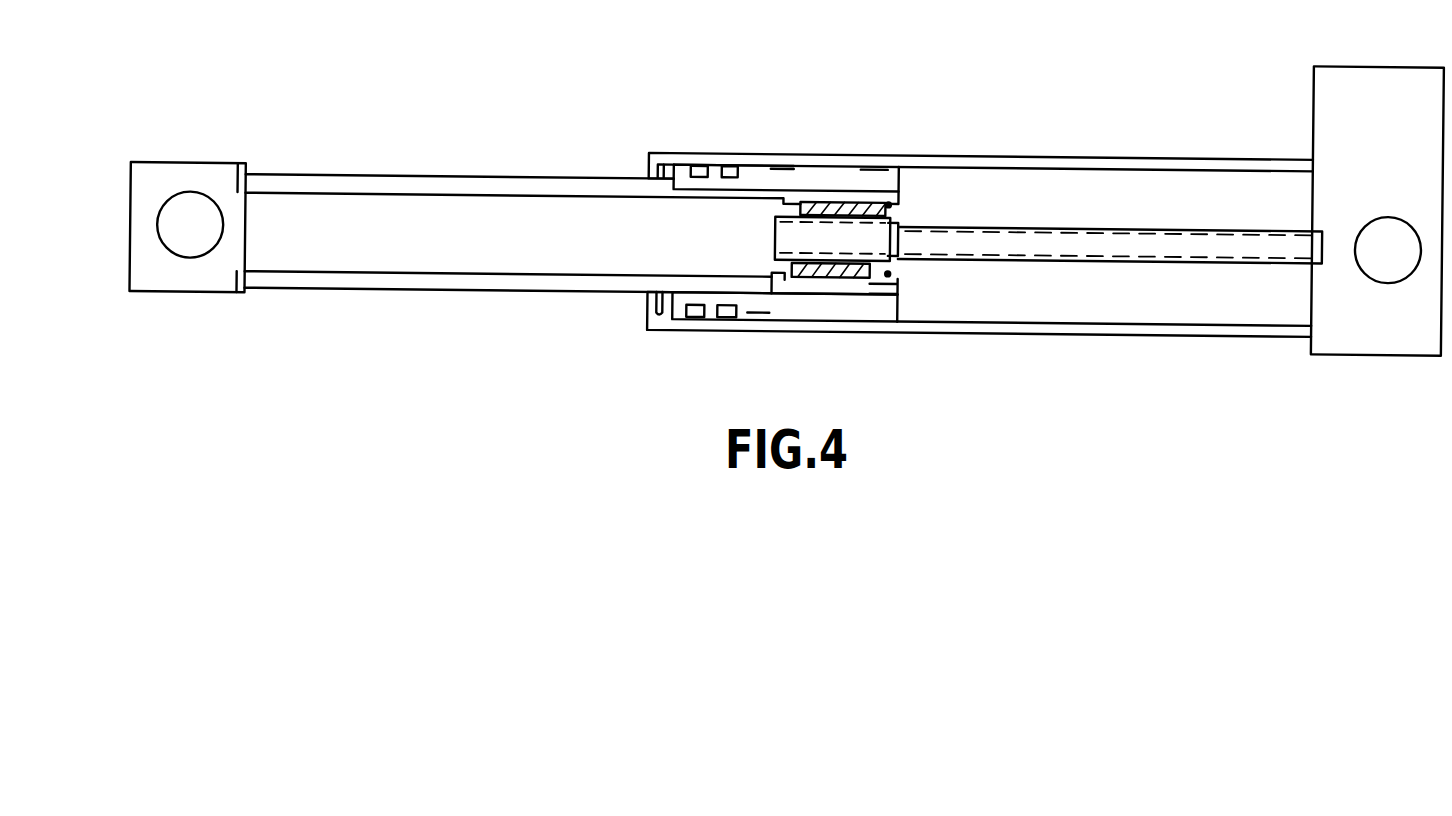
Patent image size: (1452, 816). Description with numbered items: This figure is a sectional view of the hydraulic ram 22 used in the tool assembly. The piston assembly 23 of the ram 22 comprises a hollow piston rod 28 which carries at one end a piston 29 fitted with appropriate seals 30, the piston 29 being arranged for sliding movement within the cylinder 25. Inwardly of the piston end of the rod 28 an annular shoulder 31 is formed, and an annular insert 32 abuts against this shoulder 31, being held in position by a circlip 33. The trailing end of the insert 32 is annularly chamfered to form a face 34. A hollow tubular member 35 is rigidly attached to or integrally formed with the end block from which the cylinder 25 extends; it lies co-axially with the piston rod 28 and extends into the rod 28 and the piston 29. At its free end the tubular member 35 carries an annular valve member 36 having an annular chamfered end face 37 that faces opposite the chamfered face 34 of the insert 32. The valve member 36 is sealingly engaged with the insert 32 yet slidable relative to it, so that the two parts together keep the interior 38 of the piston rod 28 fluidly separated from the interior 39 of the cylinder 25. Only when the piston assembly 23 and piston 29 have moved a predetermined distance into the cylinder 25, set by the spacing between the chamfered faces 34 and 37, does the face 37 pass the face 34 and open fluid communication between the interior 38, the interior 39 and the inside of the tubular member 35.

The hydraulic ram 22 is at (836, 100).
The piston assembly 23 is at (492, 150).
The cylinder 25 is at (1062, 153).
The hollow piston rod 28 is at (447, 296).
The piston 29 is at (762, 166).
The seals 30 is at (722, 166).
The annular shoulder 31 is at (792, 280).
The annular insert 32 is at (861, 280).
The circlip 33 is at (903, 197).
The chamfered face 34 is at (815, 203).
The hollow tubular member 35 is at (1065, 262).
The annular valve member 36 is at (776, 263).
The annular chamfered end face 37 is at (898, 267).
The interior of the piston rod 38 is at (565, 262).
The interior of the cylinder 39 is at (1182, 318).